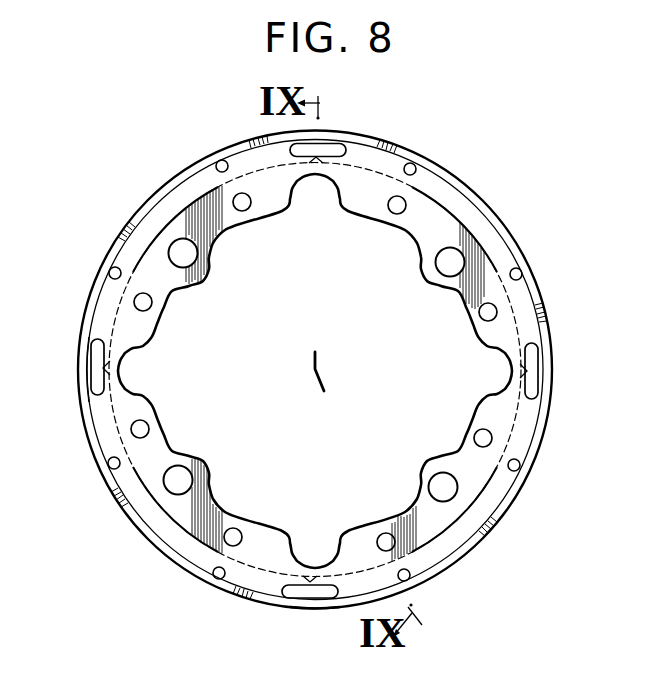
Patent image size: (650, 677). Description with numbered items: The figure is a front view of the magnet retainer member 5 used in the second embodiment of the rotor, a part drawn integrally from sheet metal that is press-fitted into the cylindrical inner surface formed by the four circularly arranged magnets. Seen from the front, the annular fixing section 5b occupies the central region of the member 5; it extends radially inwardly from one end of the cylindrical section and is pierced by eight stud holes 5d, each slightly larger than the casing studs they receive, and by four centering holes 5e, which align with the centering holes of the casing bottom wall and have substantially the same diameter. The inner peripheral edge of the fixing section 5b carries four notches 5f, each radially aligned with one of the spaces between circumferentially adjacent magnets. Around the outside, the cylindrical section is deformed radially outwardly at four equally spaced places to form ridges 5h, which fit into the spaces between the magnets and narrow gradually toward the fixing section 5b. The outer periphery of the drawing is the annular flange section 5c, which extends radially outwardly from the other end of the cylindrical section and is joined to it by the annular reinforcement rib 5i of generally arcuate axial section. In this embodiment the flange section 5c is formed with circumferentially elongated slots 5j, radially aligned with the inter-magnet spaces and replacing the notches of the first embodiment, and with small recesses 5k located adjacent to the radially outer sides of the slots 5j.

The magnet retainer member 5 is at (500, 217).
The annular fixing section 5b is at (445, 513).
The annular flange section 5c is at (453, 560).
The stud holes 5d is at (487, 438).
The centering holes 5e is at (172, 486).
The notches 5f is at (132, 392).
The ridges 5h is at (88, 364).
The annular reinforcement rib 5i is at (497, 495).
The circumferentially elongated slots 5j is at (95, 348).
The small recesses 5k is at (312, 606).